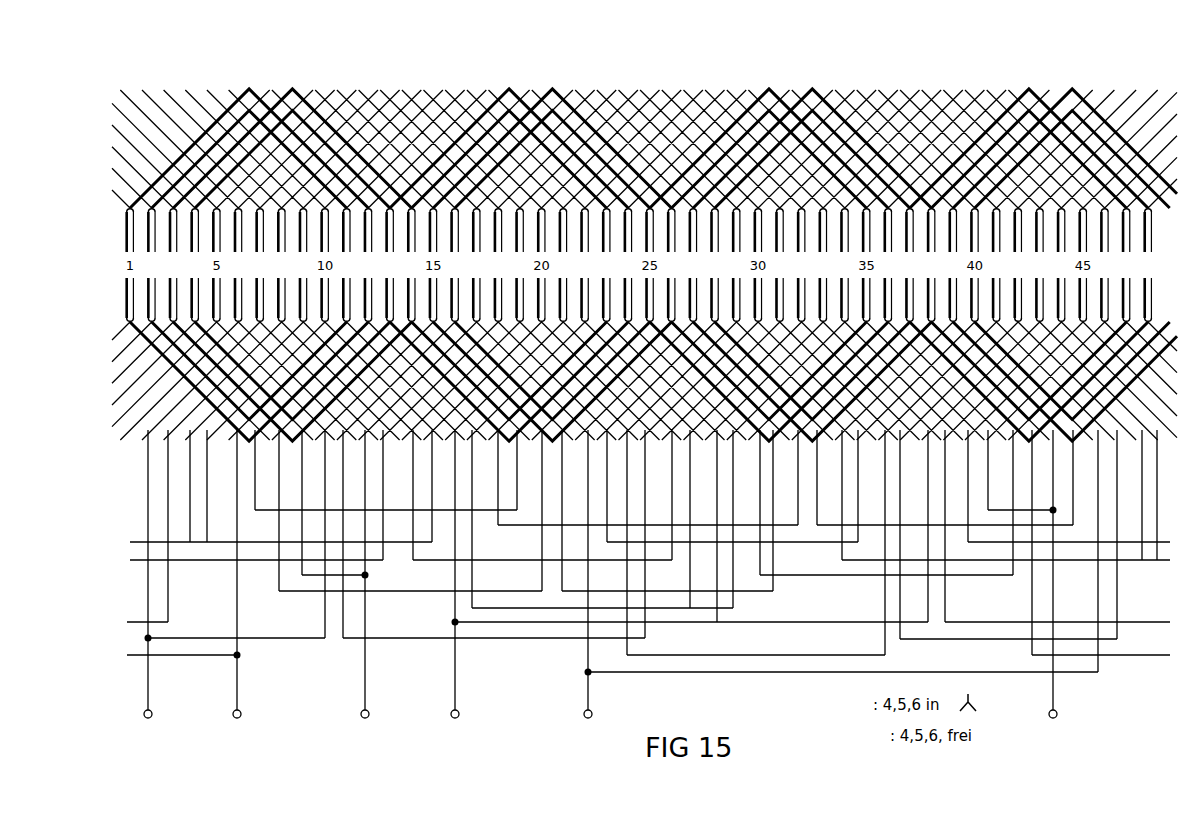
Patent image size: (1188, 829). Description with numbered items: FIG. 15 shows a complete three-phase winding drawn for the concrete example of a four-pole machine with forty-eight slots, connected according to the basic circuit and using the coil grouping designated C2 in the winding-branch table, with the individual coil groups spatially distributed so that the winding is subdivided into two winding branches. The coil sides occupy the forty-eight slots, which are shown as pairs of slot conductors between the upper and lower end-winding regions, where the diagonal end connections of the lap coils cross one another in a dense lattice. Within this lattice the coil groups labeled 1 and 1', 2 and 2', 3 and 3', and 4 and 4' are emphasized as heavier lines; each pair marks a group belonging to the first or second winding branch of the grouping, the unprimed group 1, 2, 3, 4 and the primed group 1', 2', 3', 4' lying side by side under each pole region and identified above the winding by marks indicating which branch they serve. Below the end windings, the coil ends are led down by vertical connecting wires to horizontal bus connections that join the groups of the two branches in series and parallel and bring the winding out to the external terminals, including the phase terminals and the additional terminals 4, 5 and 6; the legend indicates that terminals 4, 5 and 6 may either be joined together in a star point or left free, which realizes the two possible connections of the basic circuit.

The coil group 1 (phase I) 1 is at (249, 240).
The coil group 1' (phase II) 1' is at (292, 240).
The coil group 2 is at (509, 240).
The coil group 2' is at (552, 240).
The coil group 3 is at (769, 240).
The coil group 3' is at (812, 240).
The coil group 4 / terminal 4 is at (1029, 396).
The coil group 4' is at (1065, 240).
The terminal 5 is at (148, 591).
The terminal 6 is at (365, 591).